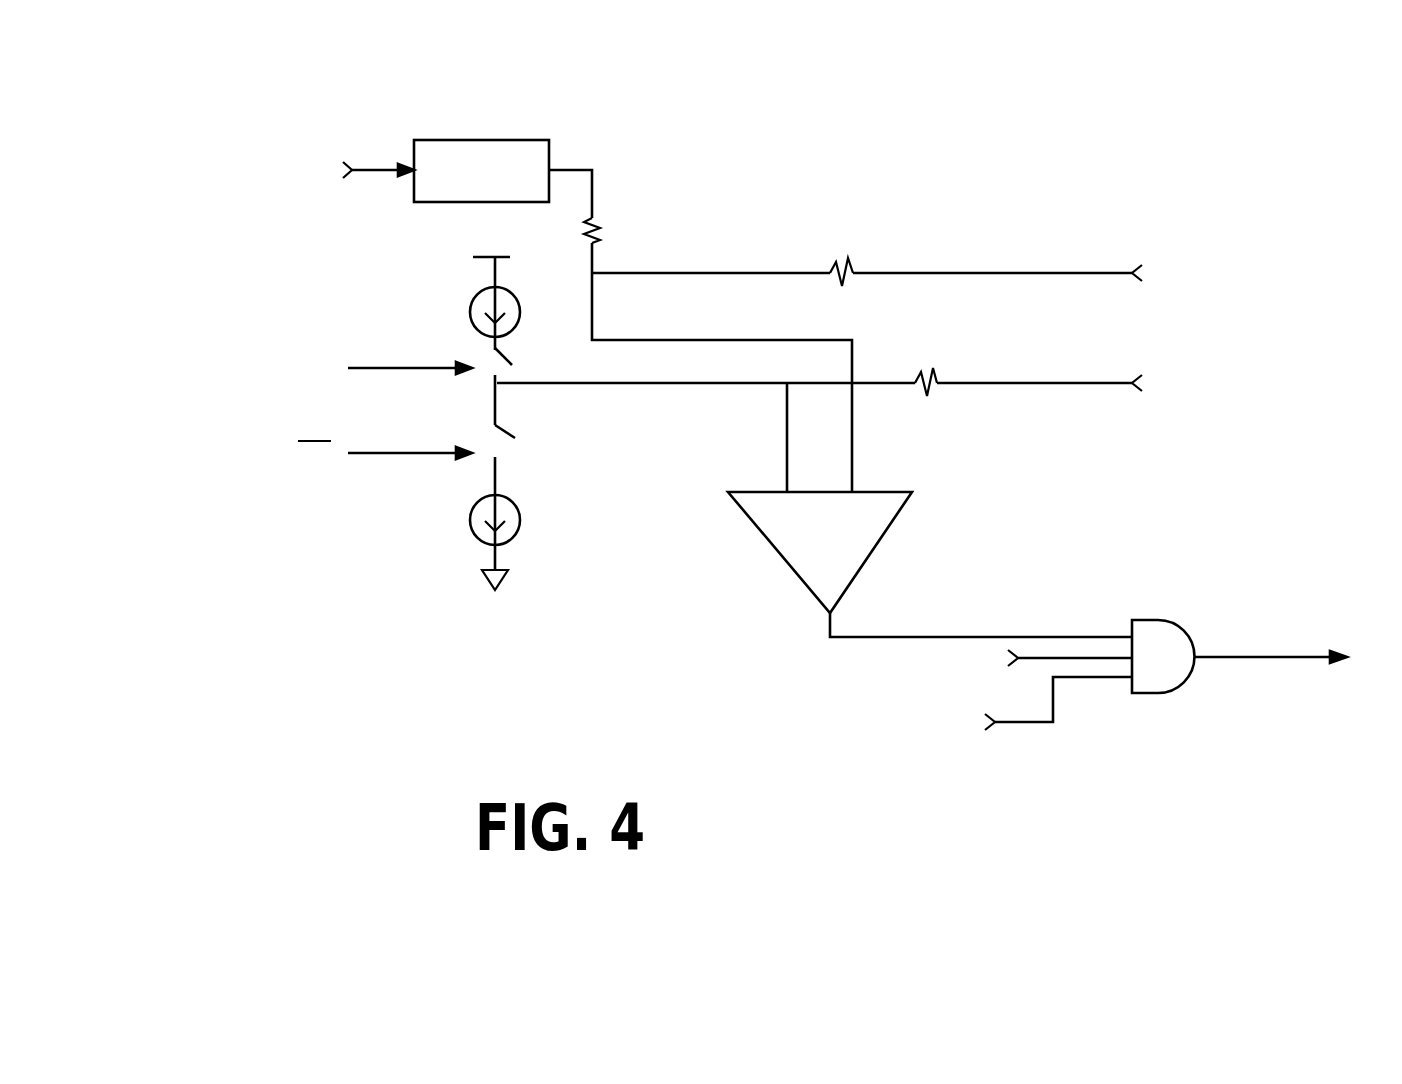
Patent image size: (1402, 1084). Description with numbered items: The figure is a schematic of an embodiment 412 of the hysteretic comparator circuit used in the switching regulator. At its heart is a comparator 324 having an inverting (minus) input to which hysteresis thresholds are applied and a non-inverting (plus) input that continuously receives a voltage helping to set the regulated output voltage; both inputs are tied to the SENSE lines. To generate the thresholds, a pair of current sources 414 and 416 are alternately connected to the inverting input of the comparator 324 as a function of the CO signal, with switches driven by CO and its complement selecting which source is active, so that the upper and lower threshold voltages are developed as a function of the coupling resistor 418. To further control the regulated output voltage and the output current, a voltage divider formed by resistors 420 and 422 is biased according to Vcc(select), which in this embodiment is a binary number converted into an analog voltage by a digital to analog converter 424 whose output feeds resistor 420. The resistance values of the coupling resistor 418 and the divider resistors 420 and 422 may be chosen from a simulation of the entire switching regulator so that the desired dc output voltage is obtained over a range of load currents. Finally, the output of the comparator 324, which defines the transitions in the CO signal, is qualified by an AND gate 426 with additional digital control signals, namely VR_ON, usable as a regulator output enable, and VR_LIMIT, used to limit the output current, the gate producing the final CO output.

The hysteretic comparator circuit embodiment 412 is at (1222, 182).
The digital to analog converter 424 is at (497, 139).
The resistor 420 is at (610, 215).
The resistor 422 is at (852, 252).
The coupling resistor 418 is at (935, 357).
The current source 414 is at (514, 290).
The current source 416 is at (520, 500).
The comparator 324 is at (886, 490).
The AND gate 426 is at (1165, 620).